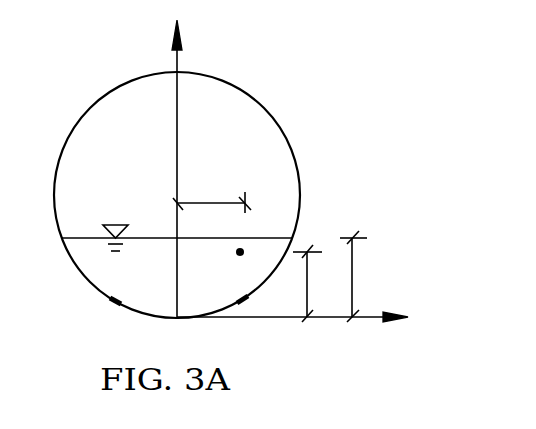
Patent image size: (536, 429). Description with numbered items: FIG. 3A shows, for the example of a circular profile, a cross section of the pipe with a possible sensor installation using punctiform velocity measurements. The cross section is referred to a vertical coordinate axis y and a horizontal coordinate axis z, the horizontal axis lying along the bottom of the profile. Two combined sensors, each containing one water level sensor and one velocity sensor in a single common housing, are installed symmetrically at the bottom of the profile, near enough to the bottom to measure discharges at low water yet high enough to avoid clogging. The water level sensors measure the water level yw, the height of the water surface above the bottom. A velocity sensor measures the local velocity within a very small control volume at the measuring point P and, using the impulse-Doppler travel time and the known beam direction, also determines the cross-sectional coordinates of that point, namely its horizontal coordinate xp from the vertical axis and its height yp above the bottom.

The vertical cross-sectional coordinate axis y is at (185, 162).
The horizontal coordinate axis z is at (301, 317).
The horizontal cross-sectional coordinate of measuring point xp is at (212, 190).
The measuring point P is at (248, 251).
The vertical cross-sectional coordinate of measuring point yp is at (316, 283).
The water level yw is at (365, 276).